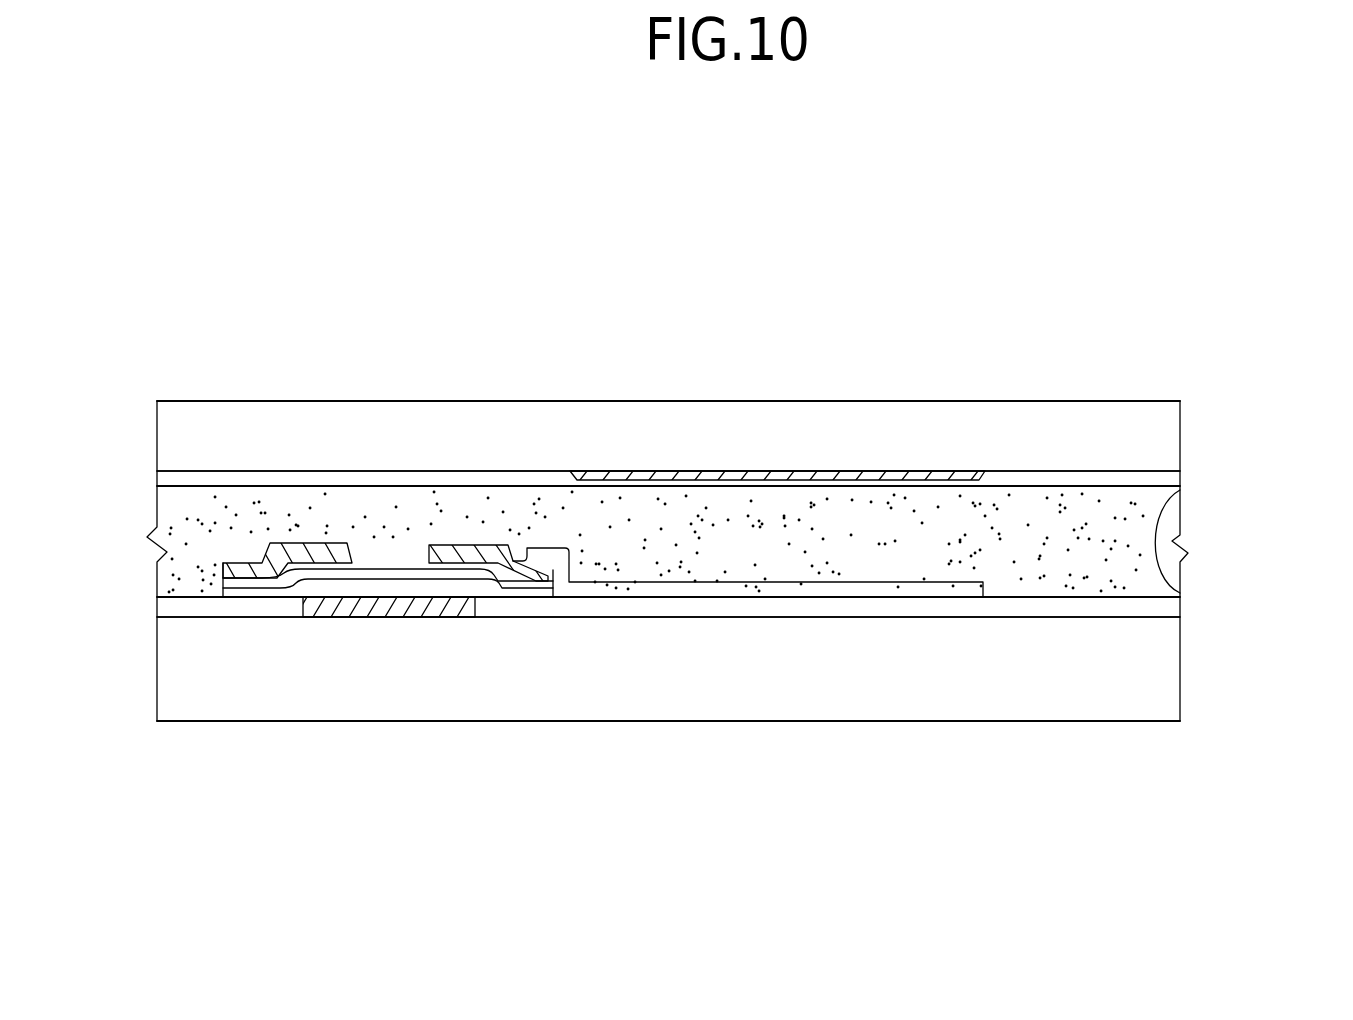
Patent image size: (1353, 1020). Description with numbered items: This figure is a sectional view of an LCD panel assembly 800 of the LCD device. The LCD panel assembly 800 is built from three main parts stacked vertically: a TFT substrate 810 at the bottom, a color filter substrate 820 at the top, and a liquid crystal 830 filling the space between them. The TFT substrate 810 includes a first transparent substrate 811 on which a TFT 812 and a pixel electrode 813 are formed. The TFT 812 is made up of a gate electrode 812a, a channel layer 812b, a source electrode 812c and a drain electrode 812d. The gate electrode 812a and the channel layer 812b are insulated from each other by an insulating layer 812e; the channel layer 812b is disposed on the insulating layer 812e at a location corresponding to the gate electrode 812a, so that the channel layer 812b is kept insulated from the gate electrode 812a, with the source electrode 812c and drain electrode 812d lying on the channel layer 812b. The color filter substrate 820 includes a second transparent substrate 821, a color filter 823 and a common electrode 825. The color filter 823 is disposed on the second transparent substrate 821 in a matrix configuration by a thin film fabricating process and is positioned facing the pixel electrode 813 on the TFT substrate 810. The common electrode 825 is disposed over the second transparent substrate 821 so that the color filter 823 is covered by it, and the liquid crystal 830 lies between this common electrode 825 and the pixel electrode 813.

The LCD panel assembly 800 is at (1084, 340).
The TFT substrate 810 is at (1208, 674).
The first transparent substrate 811 is at (913, 697).
The TFT 812 is at (340, 705).
The gate electrode 812a is at (413, 610).
The channel layer 812b is at (262, 590).
The source electrode 812c is at (223, 567).
The drain electrode 812d is at (460, 550).
The insulating layer 812e is at (507, 610).
The pixel electrode 813 is at (755, 590).
The color filter substrate 820 is at (1208, 449).
The second transparent substrate 821 is at (910, 417).
The color filter 823 is at (790, 472).
The common electrode 825 is at (340, 478).
The liquid crystal 830 is at (1208, 566).